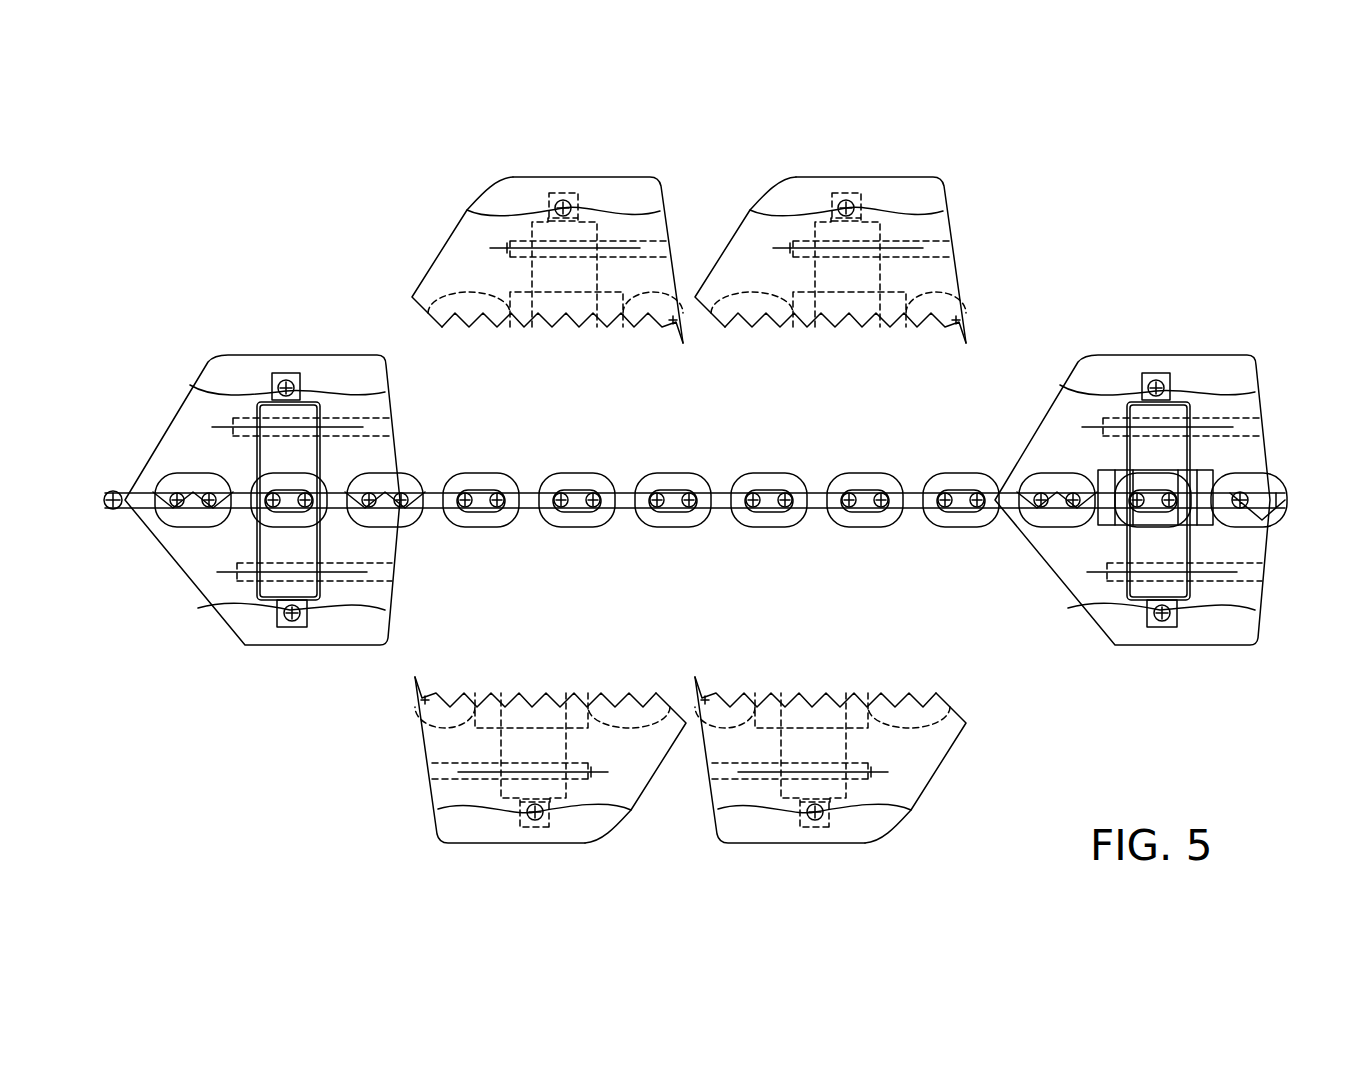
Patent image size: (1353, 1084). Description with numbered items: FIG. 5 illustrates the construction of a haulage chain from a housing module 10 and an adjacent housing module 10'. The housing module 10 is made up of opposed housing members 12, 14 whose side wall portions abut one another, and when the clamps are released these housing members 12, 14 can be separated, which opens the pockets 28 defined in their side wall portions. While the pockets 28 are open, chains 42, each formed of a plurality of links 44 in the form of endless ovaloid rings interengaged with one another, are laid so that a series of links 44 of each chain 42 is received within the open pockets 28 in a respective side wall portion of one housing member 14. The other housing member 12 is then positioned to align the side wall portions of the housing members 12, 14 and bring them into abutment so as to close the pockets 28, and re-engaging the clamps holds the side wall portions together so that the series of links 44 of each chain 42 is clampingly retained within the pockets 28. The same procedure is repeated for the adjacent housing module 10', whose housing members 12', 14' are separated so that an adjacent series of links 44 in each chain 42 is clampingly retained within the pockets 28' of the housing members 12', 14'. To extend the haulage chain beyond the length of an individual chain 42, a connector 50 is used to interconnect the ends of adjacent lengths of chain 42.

The housing module 10 is at (830, 218).
The adjacent housing module 10' is at (547, 219).
The housing member 12 is at (858, 219).
The housing member 12' is at (575, 219).
The housing member 14 is at (830, 779).
The housing member 14' is at (550, 778).
The pocket 28 is at (822, 684).
The pocket 28' is at (542, 680).
The chain 42 is at (695, 495).
The link 44 is at (492, 518).
The connector 50 is at (1153, 483).